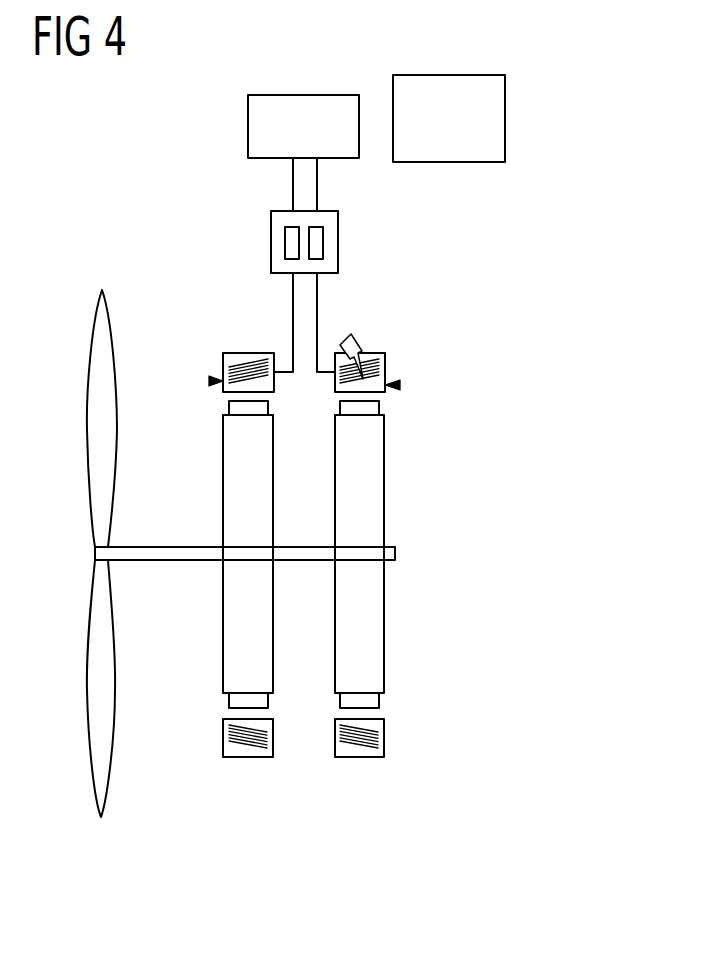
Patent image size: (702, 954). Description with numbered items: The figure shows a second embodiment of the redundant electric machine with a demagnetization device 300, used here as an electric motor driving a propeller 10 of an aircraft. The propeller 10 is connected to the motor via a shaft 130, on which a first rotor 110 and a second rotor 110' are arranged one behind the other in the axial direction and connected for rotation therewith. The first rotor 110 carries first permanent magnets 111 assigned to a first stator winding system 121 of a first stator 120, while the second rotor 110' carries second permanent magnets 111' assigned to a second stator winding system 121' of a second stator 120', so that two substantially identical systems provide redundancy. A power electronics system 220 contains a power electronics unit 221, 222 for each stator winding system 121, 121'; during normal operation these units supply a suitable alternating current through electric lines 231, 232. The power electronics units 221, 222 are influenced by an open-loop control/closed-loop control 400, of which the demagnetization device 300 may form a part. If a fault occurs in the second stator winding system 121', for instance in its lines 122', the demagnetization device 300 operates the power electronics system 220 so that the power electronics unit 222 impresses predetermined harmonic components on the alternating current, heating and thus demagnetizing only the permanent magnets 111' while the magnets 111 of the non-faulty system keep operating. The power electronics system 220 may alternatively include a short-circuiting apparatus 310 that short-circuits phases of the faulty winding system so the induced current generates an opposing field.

The propeller 10 is at (97, 683).
The first rotor 110 is at (211, 554).
The second rotor 110' is at (399, 554).
The first permanent magnets 111 is at (212, 553).
The second permanent magnets 111' is at (400, 553).
The first stator 120 is at (212, 565).
The second stator 120' is at (403, 579).
The first stator winding system 121 is at (173, 541).
The second stator winding system 121' is at (448, 556).
The lines of the faulty stator winding system 122' is at (310, 410).
The shaft 130 is at (395, 553).
The power electronics system 220 is at (378, 237).
The first power electronics unit 221 is at (285, 243).
The second power electronics unit 222 is at (323, 243).
The first electric line 231 is at (293, 322).
The second electric line 232 is at (317, 322).
The demagnetization device 300 is at (248, 128).
The short-circuiting apparatus 310 is at (338, 230).
The open-loop control/closed-loop control 400 is at (505, 130).